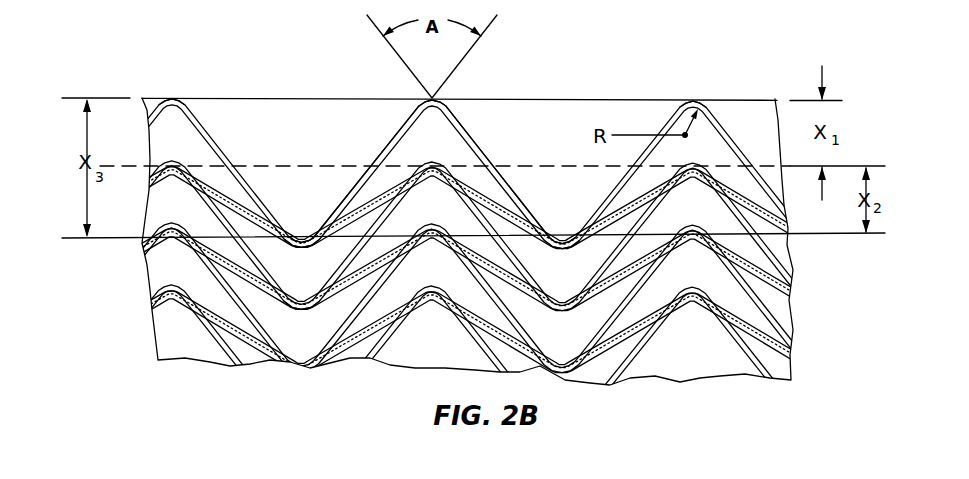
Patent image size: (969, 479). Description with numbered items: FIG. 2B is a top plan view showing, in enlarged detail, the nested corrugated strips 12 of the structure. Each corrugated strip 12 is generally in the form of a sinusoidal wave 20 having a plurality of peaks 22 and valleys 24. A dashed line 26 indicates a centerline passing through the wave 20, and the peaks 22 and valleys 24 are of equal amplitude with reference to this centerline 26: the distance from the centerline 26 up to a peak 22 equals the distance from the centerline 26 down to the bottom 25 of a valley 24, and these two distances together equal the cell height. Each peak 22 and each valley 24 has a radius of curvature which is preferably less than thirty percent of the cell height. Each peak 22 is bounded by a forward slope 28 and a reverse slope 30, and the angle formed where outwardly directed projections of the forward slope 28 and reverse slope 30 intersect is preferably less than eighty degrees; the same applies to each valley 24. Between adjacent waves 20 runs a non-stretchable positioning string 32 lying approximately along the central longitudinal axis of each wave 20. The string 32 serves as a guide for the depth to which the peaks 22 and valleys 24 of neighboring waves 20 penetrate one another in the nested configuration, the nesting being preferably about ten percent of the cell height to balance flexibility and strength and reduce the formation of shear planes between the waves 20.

The corrugated strip 12 is at (148, 103).
The sinusoidal wave 20 is at (220, 148).
The peak 22 is at (436, 95).
The valley 24 is at (293, 230).
The bottom of valley 25 is at (303, 244).
The dashed line 26 is at (137, 168).
The forward slope 28 is at (383, 146).
The reverse slope 30 is at (480, 145).
The non-stretchable positioning string 32 is at (392, 174).